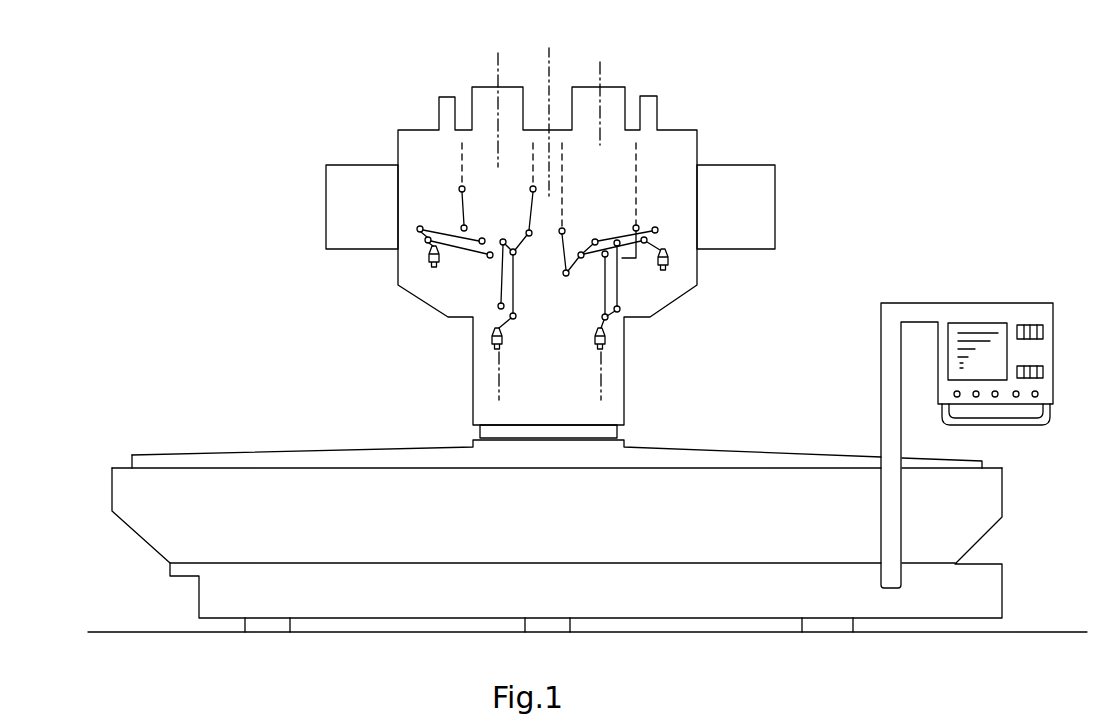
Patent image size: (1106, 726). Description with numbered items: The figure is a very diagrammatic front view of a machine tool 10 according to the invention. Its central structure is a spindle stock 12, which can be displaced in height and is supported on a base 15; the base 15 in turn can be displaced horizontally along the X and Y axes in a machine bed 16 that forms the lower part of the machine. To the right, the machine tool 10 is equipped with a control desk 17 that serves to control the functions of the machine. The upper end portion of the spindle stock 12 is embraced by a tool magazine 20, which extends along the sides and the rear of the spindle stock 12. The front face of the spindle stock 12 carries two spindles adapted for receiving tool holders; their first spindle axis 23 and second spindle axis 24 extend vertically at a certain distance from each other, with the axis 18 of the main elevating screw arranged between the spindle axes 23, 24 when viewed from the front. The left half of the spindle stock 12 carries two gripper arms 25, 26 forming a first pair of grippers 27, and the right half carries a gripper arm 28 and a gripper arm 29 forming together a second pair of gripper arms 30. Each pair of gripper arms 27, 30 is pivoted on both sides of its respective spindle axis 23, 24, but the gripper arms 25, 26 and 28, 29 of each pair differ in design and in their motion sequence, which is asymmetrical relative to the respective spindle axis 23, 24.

The machine tool 10 is at (934, 125).
The spindle stock 12 is at (682, 143).
The base 15 is at (630, 445).
The machine bed 16 is at (758, 462).
The control desk 17 is at (1042, 347).
The axis of the main elevating screw 18 is at (549, 55).
The tool magazine 20 is at (768, 190).
The first spindle axis 23 is at (498, 362).
The second spindle axis 24 is at (601, 362).
The gripper arm 25 is at (438, 230).
The gripper arm 26 is at (514, 278).
The first pair of grippers 27 is at (419, 320).
The gripper arm 28 is at (617, 236).
The gripper arm 29 is at (604, 290).
The second pair of gripper arms 30 is at (690, 320).